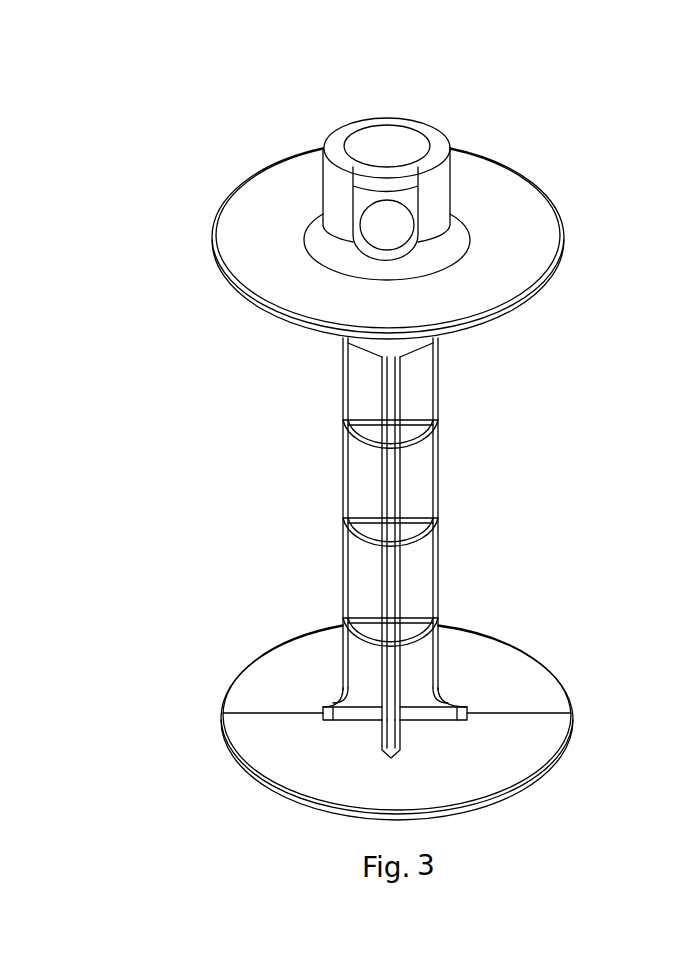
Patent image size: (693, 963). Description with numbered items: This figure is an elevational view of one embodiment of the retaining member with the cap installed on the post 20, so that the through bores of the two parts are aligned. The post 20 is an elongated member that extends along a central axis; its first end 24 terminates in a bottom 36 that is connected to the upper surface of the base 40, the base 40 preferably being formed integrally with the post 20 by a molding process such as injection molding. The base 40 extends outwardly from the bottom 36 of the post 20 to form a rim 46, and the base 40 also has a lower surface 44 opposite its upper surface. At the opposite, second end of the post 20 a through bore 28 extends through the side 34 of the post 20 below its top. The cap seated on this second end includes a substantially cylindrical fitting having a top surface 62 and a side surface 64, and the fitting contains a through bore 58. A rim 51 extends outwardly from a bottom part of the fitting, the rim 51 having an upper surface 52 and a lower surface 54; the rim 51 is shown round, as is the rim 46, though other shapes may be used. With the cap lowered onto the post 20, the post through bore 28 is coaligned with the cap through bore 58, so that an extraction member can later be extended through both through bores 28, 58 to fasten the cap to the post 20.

The post 20 is at (343, 452).
The first end 24 is at (443, 658).
The through bore 28 is at (343, 237).
The side 34 is at (347, 570).
The bottom 36 is at (428, 722).
The base 40 is at (208, 697).
The lower surface 44 is at (268, 808).
The rim 46 is at (573, 707).
The rim 51 is at (223, 203).
The upper surface 52 is at (530, 240).
The lower surface 54 is at (518, 328).
The through bore 58 is at (323, 183).
The top surface 62 is at (377, 138).
The side surface 64 is at (437, 200).